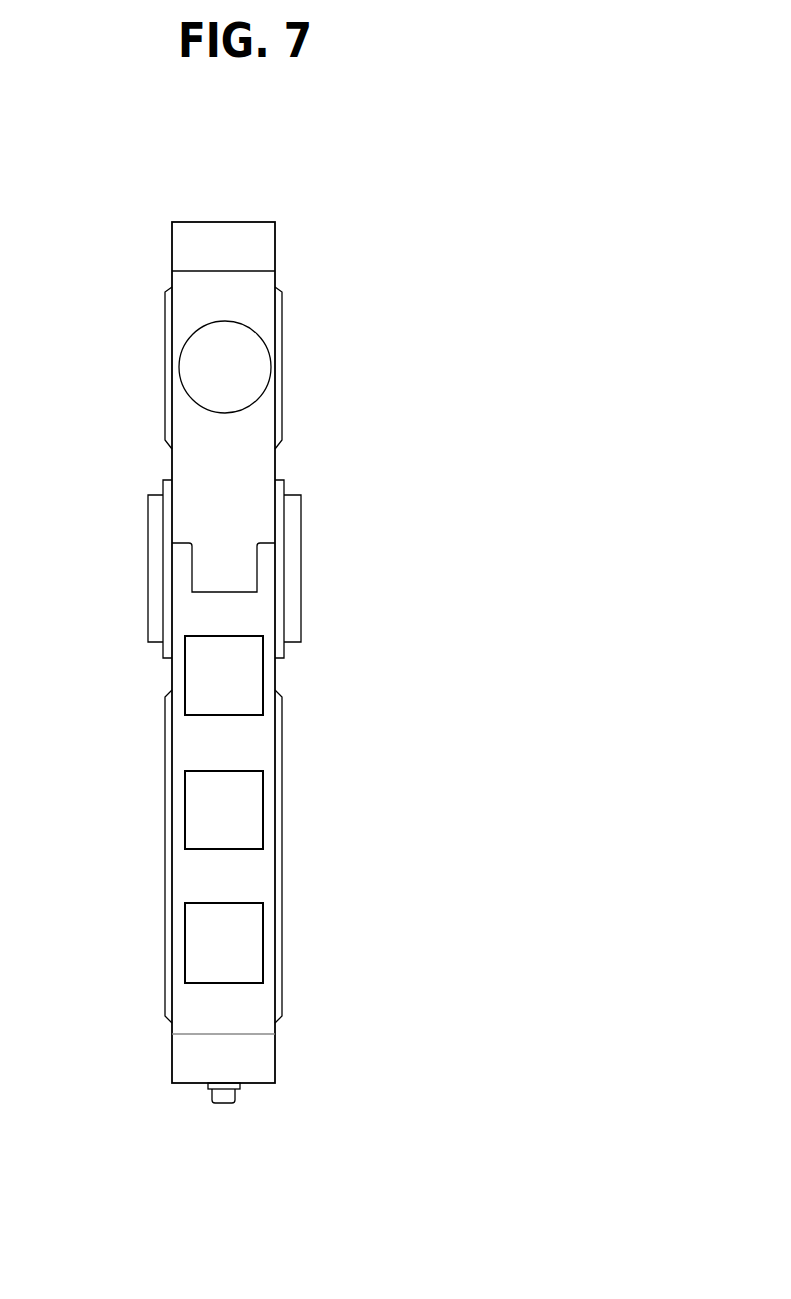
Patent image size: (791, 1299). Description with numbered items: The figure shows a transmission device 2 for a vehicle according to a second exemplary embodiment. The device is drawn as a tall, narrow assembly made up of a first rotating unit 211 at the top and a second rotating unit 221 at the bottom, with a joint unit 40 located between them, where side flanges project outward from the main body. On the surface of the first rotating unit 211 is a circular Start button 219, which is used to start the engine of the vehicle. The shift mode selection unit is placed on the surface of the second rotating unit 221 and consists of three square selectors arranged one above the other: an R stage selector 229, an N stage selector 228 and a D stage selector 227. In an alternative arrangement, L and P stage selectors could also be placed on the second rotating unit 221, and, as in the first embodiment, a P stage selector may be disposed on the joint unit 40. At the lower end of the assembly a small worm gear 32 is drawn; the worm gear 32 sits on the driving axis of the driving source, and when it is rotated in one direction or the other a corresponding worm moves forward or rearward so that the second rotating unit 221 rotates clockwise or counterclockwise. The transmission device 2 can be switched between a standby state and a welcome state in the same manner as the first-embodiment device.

The transmission device 2 is at (419, 242).
The first rotating unit 211 is at (258, 294).
The Start button 219 is at (255, 367).
The joint unit 40 is at (325, 571).
The second rotating unit 221 is at (270, 873).
The R stage selector 229 is at (193, 675).
The N stage selector 228 is at (193, 808).
The D stage selector 227 is at (193, 944).
The worm gear 32 is at (228, 1103).